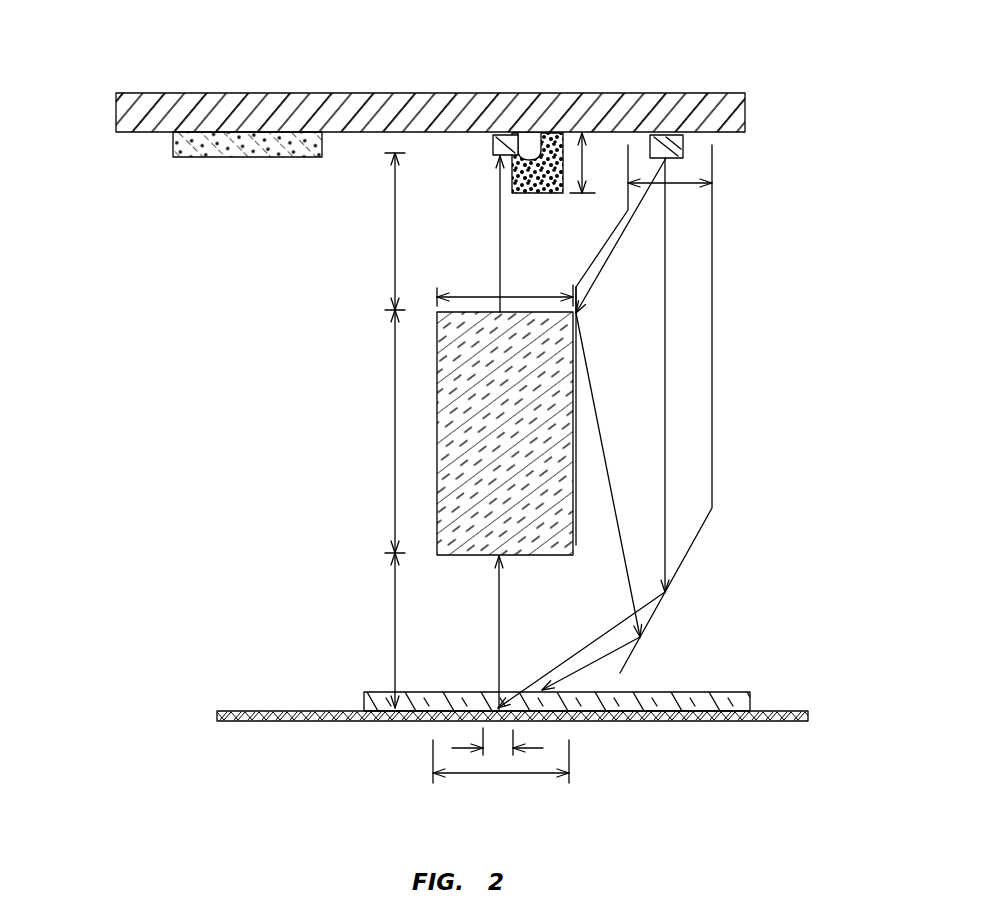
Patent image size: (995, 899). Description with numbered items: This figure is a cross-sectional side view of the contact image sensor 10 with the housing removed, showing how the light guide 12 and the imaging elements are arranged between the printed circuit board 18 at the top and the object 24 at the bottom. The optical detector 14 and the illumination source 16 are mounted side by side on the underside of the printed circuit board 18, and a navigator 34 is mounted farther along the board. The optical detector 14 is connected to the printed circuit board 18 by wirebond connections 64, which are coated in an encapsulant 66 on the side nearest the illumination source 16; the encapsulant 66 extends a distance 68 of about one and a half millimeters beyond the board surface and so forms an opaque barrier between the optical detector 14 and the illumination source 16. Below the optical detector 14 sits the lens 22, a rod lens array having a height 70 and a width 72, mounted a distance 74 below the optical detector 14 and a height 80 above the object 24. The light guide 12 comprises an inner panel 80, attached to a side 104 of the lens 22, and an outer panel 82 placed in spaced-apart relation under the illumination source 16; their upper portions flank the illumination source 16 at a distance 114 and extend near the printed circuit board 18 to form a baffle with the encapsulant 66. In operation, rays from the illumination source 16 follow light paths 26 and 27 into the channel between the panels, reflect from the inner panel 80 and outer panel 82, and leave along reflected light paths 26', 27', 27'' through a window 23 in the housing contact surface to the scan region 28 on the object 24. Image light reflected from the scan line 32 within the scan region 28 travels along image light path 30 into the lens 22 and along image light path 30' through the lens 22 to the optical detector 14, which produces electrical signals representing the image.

The contact image sensor 10 is at (90, 56).
The light guide 12 is at (748, 277).
The optical detector 14 is at (478, 152).
The illumination source 16 is at (700, 152).
The printed circuit board 18 is at (282, 93).
The lens 22 is at (541, 557).
The window 23 is at (700, 692).
The object 24 is at (778, 711).
The light path 26 is at (641, 375).
The reflected light path 26' is at (581, 650).
The light path 27 is at (621, 238).
The reflected light path 27' is at (611, 475).
The reflected light path 27'' is at (591, 653).
The scan region 28 is at (489, 773).
The image light path 30 is at (476, 633).
The image light path 30' is at (479, 234).
The scan line 32 is at (452, 748).
The navigator 34 is at (218, 158).
The wirebond connections 64 is at (522, 138).
The encapsulant 66 is at (552, 135).
The distance 68 is at (590, 168).
The height 70 is at (395, 400).
The width 72 is at (486, 297).
The distance 74 is at (395, 212).
The inner panel 80 is at (395, 615).
The outer panel 82 is at (713, 350).
The side of the lens 104 is at (574, 546).
The distance 114 is at (688, 184).